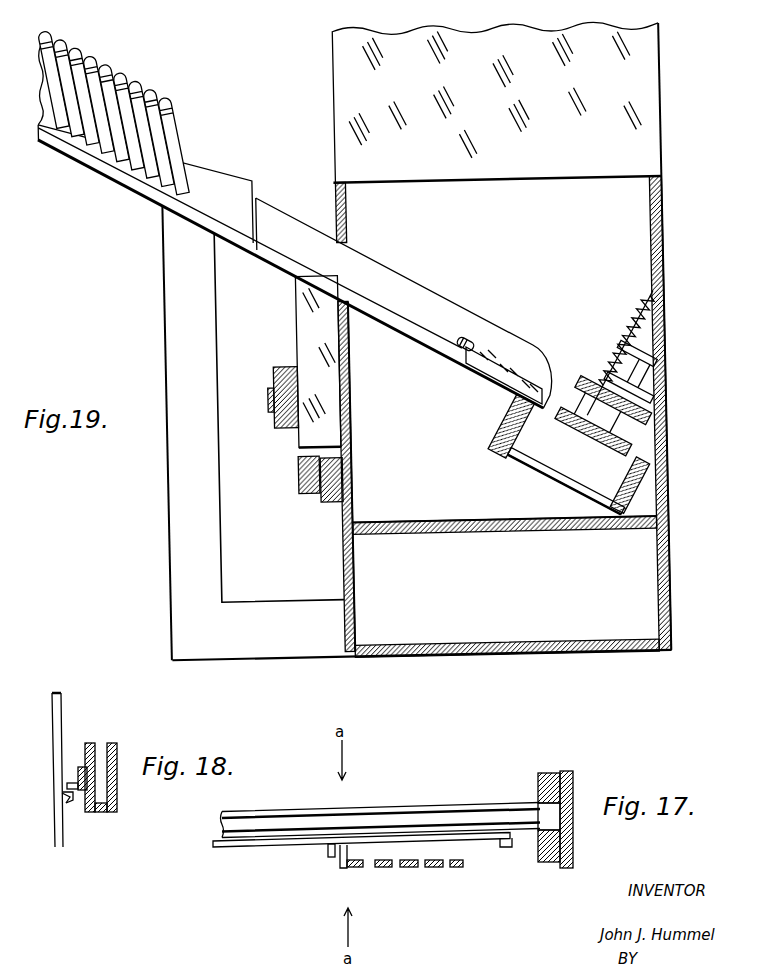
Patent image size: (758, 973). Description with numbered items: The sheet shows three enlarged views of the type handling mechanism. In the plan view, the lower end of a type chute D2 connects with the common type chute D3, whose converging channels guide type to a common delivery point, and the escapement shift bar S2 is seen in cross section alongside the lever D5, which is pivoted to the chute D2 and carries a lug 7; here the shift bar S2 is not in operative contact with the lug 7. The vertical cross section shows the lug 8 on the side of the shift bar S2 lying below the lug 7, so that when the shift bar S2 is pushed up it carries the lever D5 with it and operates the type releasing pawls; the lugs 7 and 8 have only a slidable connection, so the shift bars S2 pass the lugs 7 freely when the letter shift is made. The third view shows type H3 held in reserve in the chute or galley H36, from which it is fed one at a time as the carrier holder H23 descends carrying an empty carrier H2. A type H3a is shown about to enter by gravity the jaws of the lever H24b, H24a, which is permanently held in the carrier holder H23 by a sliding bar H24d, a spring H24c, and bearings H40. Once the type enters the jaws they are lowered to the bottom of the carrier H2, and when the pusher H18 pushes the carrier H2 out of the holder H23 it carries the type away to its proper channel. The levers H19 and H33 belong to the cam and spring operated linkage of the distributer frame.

In FIG. 19, the type chute or galley H36 is at (88, 145).
In FIG. 19, the type H3 is at (171, 135).
In FIG. 19, the type about to enter jaws H3a is at (478, 342).
In FIG. 19, the lever H19 is at (283, 413).
In FIG. 19, the lever H33 is at (297, 465).
In FIG. 19, the pusher H18 is at (328, 495).
In FIG. 19, the carrier holder H23 is at (643, 266).
In FIG. 19, the jaw lever portion H24a is at (582, 377).
In FIG. 19, the jaw lever portion H24b is at (597, 437).
In FIG. 19, the spring H24c is at (636, 309).
In FIG. 19, the sliding bar H24d is at (646, 338).
In FIG. 19, the bearings H40 is at (637, 387).
In FIG. 19, the carrier H2 is at (540, 468).
In FIG. 18, the escapement shift bar S2 is at (60, 823).
In FIG. 17, the escapement shift bar S2 is at (360, 870).
In FIG. 18, the lug 7 is at (75, 783).
In FIG. 17, the lug 7 is at (327, 851).
In FIG. 18, the lug 8 is at (66, 801).
In FIG. 17, the lug 8 is at (340, 863).
In FIG. 18, the lever D5 is at (82, 770).
In FIG. 17, the lever D5 is at (245, 848).
In FIG. 18, the type chute D2 is at (116, 801).
In FIG. 17, the type chute D2 is at (403, 808).
In FIG. 17, the common type chute D3 is at (571, 846).